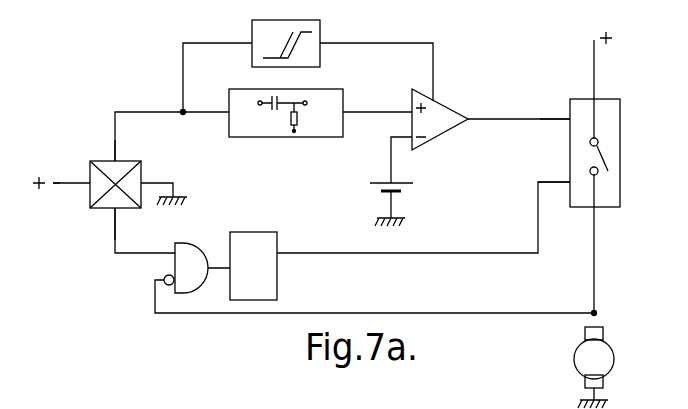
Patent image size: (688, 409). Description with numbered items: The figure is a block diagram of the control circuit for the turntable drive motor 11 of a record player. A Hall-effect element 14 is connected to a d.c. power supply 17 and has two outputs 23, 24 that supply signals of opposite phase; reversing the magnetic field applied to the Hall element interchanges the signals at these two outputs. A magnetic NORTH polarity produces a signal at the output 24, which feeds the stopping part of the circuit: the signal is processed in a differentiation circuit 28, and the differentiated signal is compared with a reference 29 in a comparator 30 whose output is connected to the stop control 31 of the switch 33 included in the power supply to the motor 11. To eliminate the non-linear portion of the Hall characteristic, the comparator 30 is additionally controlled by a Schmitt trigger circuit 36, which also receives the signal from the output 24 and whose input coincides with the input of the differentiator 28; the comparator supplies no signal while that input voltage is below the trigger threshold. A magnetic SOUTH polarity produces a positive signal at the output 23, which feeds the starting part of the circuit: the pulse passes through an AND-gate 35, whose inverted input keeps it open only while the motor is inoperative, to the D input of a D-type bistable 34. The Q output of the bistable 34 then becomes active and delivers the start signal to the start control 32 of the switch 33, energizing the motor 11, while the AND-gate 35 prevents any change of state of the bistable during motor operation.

The motor 11 is at (604, 360).
The Hall-effect element 14 is at (107, 200).
The d.c. power supply 17 is at (63, 183).
The output 23 is at (115, 237).
The output 24 is at (113, 142).
The differentiation circuit 28 is at (313, 125).
The reference 29 is at (400, 190).
The comparator 30 is at (437, 115).
The stop control 31 is at (563, 118).
The start control 32 is at (564, 181).
The switch 33 is at (607, 113).
The D-type bistable 34 is at (277, 292).
The AND-gate 35 is at (190, 256).
The Schmitt trigger circuit 36 is at (309, 35).